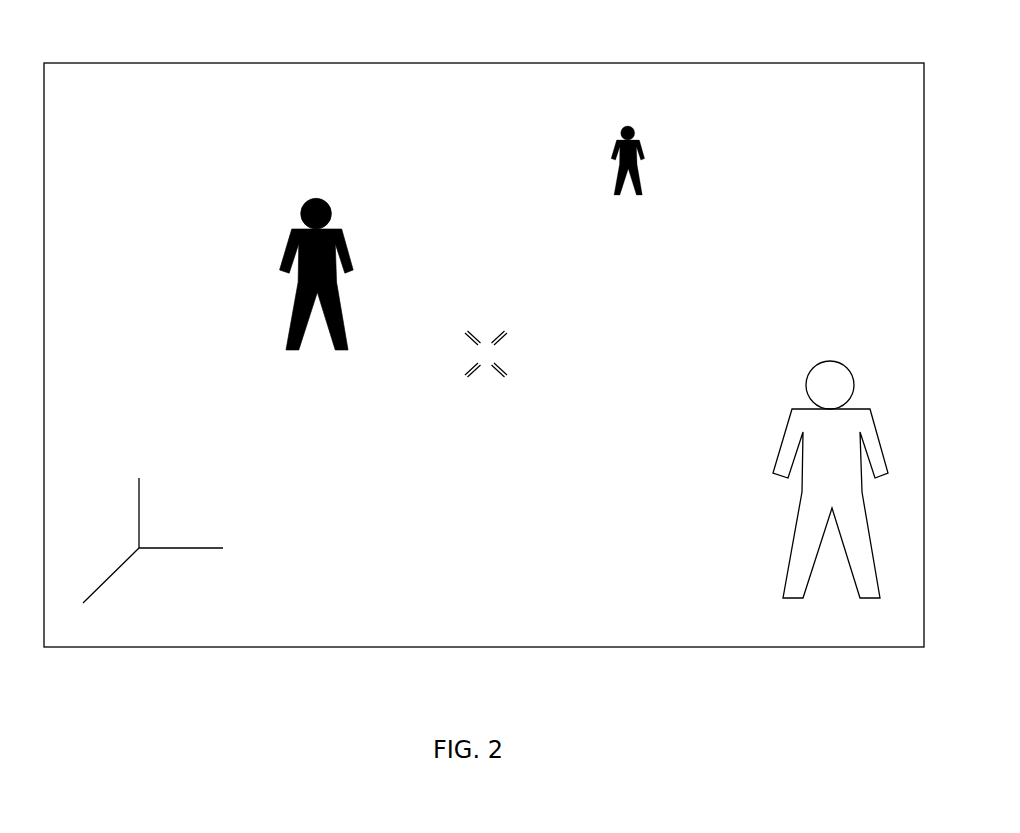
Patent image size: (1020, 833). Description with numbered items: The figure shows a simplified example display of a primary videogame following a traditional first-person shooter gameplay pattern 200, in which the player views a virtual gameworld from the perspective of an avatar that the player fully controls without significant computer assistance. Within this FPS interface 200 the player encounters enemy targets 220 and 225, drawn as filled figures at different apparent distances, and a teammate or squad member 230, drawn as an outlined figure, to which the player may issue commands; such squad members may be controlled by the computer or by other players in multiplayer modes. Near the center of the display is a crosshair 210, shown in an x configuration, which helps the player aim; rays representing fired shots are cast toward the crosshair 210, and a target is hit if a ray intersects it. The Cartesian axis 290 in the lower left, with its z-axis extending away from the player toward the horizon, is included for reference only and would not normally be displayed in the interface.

The FPS gameplay pattern 200 is at (485, 62).
The crosshair 210 is at (486, 363).
The enemy target 220 is at (317, 286).
The enemy target 225 is at (627, 172).
The teammate or squad member 230 is at (830, 492).
The Cartesian axis 290 is at (147, 556).